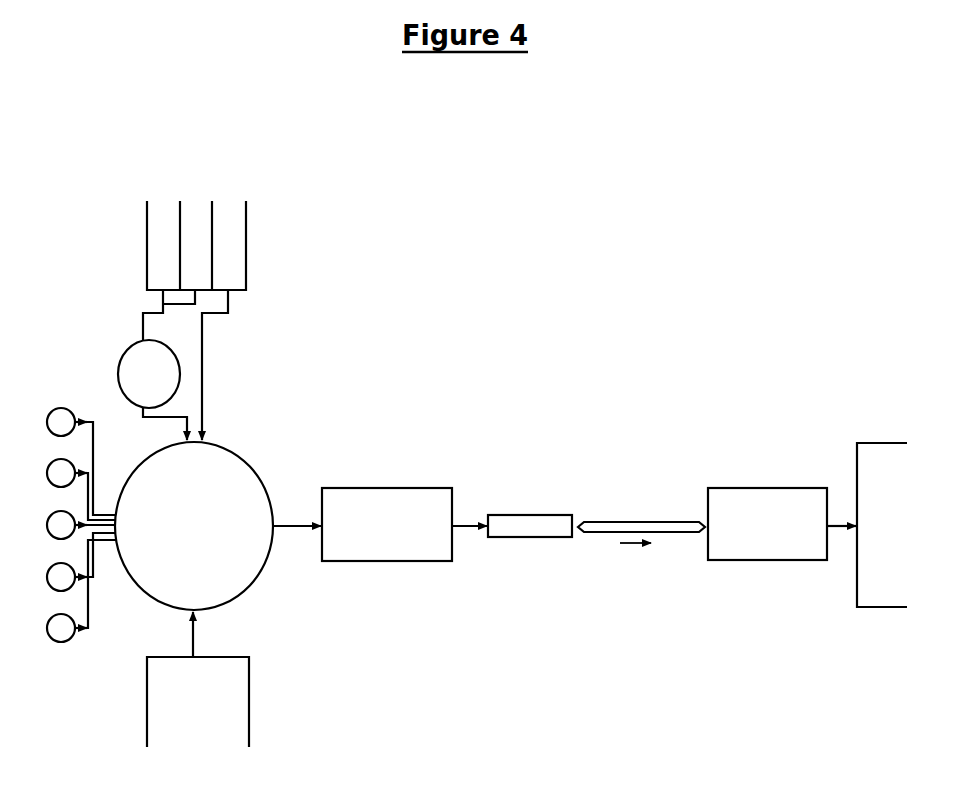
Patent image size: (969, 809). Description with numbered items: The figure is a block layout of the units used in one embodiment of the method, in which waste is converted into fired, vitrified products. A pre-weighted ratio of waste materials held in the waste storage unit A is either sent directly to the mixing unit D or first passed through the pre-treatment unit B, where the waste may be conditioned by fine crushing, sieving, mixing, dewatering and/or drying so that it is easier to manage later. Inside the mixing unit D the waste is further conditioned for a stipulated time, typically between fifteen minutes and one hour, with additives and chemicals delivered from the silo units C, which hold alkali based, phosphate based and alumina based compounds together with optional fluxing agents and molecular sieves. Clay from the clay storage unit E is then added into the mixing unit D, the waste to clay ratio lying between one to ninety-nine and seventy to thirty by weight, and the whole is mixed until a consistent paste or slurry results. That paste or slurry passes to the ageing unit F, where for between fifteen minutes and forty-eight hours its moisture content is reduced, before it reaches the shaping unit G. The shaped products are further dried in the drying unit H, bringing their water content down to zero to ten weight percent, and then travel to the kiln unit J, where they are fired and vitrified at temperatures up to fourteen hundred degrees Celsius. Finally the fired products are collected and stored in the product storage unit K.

The waste storage unit A is at (194, 299).
The pre-treatment unit B is at (152, 390).
The chemicals and additives silo units C is at (64, 525).
The mixing unit D is at (194, 526).
The clay storage unit E is at (198, 679).
The ageing unit F is at (362, 524).
The shaping unit G is at (512, 510).
The drying unit H is at (641, 519).
The kiln unit J is at (767, 524).
The product storage unit K is at (867, 525).